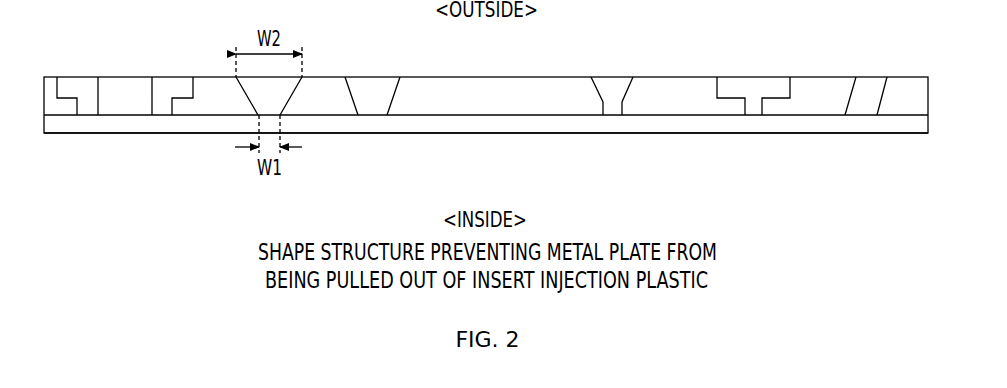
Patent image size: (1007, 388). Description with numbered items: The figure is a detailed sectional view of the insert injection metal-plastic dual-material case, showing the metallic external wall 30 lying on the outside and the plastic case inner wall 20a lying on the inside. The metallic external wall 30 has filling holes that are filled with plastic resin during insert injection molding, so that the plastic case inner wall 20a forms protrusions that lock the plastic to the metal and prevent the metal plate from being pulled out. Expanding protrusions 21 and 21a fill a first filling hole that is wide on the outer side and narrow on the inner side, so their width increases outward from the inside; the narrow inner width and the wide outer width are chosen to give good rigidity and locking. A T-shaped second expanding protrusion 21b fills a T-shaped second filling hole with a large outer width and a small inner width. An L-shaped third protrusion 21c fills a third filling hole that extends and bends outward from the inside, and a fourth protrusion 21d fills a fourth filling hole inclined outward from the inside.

The metallic external wall 30 is at (430, 85).
The plastic case inner wall 20a is at (480, 123).
The expanding protrusion 21 is at (278, 92).
The expanding protrusion 21a is at (373, 84).
The T-shaped second expanding protrusion 21b is at (755, 84).
The L-shaped third protrusion 21c is at (172, 80).
The fourth protrusion 21d is at (868, 84).